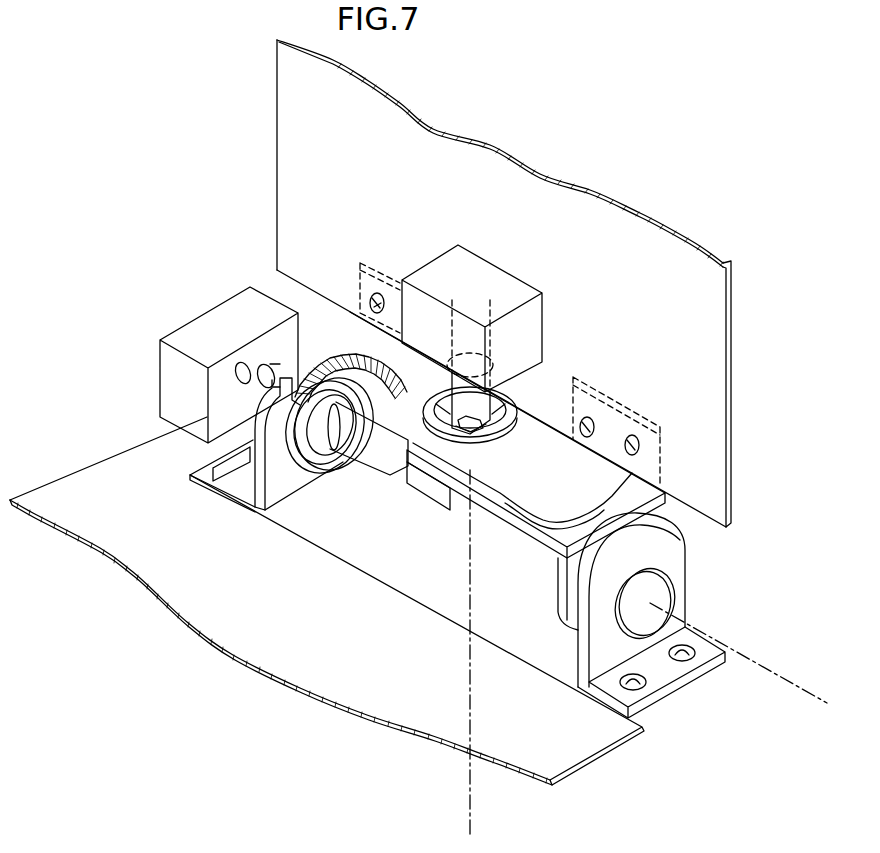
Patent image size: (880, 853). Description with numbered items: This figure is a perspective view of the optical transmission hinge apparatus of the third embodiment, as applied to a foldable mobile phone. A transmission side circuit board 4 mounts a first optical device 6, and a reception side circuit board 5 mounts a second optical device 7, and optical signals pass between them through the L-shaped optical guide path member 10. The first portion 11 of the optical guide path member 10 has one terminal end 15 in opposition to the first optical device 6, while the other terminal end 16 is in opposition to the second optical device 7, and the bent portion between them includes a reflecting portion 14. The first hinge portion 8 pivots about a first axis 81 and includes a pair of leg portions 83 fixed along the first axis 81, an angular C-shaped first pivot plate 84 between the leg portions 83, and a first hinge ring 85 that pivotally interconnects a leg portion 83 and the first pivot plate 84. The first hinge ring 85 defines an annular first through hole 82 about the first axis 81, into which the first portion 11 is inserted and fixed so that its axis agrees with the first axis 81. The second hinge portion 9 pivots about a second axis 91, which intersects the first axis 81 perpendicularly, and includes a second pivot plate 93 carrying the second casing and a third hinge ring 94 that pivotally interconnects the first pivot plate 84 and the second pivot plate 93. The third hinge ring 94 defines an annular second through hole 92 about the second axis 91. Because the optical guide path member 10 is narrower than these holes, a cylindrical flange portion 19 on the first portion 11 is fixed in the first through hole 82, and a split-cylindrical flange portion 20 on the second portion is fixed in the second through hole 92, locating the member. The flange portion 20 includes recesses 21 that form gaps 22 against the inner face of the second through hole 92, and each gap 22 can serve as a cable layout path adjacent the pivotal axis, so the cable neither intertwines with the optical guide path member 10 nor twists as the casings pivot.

The transmission side circuit board 4 is at (172, 583).
The reception side circuit board 5 is at (537, 188).
The first optical device 6 is at (178, 366).
The second optical device 7 is at (500, 288).
The first hinge portion 8 is at (438, 574).
The second hinge portion 9 is at (423, 373).
The optical guide path member 10 is at (507, 462).
The first portion 11 is at (371, 456).
The reflecting portion 14 is at (455, 512).
The one terminal end 15 is at (266, 366).
The other terminal end 16 is at (455, 355).
The flange portion 19 is at (341, 462).
The flange portion 20 is at (484, 433).
The recesses 21 is at (508, 404).
The gaps 22 is at (559, 390).
The first axis 81 is at (760, 664).
The first through hole 82 is at (241, 503).
The leg portions 83 is at (232, 466).
The first pivot plate 84 is at (520, 528).
The first hinge ring 85 is at (330, 455).
The second axis 91 is at (469, 785).
The second through hole 92 is at (466, 428).
The second pivot plate 93 is at (617, 483).
The third hinge ring 94 is at (492, 398).